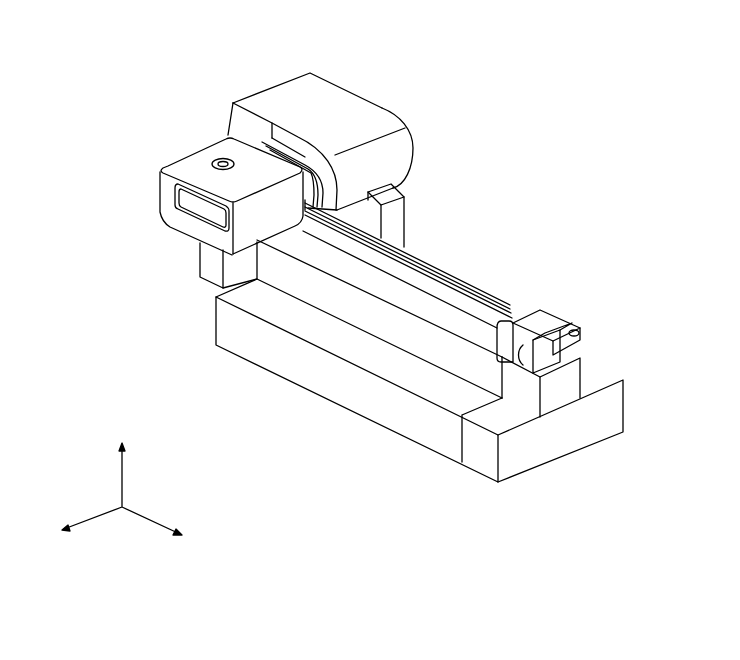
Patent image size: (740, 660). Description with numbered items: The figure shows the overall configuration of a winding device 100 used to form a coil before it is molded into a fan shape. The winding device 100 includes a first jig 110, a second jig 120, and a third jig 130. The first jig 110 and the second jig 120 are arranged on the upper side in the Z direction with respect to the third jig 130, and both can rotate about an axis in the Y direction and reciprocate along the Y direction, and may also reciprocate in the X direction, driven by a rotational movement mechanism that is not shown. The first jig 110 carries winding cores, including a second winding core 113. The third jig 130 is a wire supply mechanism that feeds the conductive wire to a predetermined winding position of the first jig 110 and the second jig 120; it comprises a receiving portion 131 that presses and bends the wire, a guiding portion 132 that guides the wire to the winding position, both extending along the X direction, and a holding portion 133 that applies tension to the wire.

The winding device 100 is at (507, 127).
The first jig 110 is at (352, 97).
The second winding core 113 is at (187, 202).
The second jig 120 is at (197, 148).
The third jig 130 is at (288, 367).
The receiving portion 131 is at (430, 272).
The guiding portion 132 is at (486, 300).
The holding portion 133 is at (548, 358).